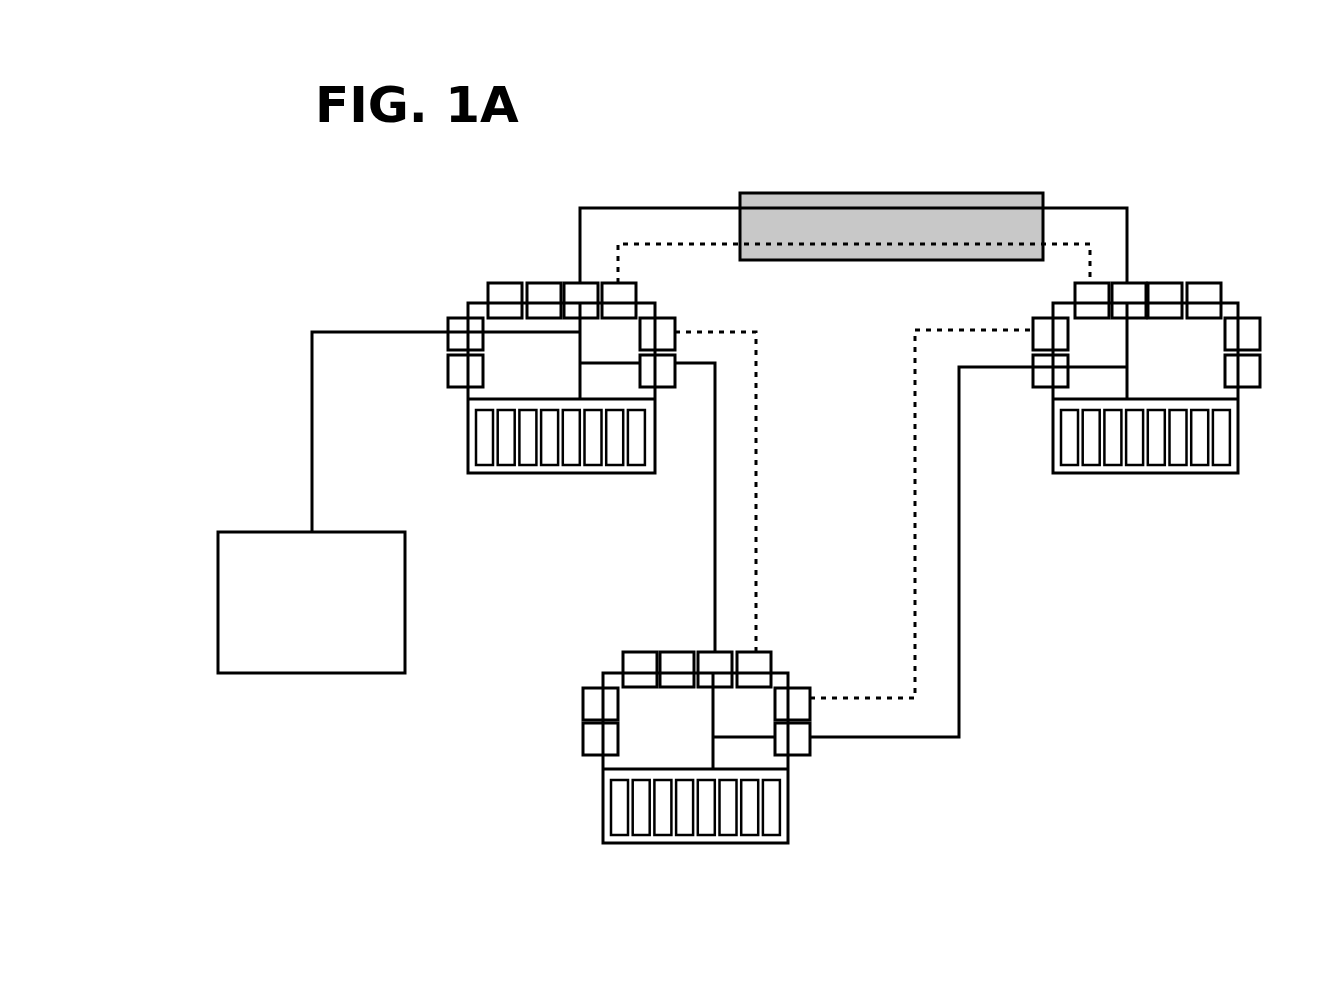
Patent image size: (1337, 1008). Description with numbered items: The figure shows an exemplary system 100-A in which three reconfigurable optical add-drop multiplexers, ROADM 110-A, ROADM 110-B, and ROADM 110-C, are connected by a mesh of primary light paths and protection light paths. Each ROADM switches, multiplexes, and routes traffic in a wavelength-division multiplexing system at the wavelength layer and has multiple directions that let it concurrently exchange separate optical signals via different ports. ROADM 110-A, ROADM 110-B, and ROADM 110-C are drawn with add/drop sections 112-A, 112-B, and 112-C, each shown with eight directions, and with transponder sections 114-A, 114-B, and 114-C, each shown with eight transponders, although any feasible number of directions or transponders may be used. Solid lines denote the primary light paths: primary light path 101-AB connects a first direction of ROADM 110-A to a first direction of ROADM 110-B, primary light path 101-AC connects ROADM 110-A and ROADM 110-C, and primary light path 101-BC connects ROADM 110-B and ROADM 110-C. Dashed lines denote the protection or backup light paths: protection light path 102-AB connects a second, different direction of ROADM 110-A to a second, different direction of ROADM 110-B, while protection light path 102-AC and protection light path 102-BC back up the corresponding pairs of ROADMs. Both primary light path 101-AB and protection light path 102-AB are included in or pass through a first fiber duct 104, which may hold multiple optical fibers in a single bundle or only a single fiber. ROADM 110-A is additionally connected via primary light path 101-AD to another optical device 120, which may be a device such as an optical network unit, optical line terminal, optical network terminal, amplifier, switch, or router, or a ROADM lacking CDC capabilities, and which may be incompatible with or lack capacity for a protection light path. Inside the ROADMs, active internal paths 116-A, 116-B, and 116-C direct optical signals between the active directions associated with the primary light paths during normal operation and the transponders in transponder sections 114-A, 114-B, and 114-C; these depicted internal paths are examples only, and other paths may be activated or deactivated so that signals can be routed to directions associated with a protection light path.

The system 100-A is at (443, 178).
The primary light path 101-AB is at (640, 205).
The primary light path 101-AD is at (348, 327).
The primary light path 101-AC is at (713, 538).
The primary light path 101-BC is at (959, 572).
The protection light path 102-AB is at (720, 248).
The protection light path 102-AC is at (757, 555).
The protection light path 102-BC is at (915, 360).
The first fiber duct 104 is at (828, 193).
The reconfigurable optical add-drop multiplexer 110-A is at (470, 303).
The reconfigurable optical add-drop multiplexer 110-B is at (1278, 263).
The reconfigurable optical add-drop multiplexer 110-C is at (605, 655).
The add/drop section 112-A is at (430, 383).
The add/drop section 112-B is at (1045, 407).
The add/drop section 112-C is at (550, 738).
The transponder section 114-A is at (450, 453).
The transponder section 114-B is at (1086, 491).
The transponder section 114-C is at (568, 808).
The active internal path 116-A is at (548, 338).
The active internal path 116-B is at (1217, 369).
The active internal path 116-C is at (713, 728).
The other optical device 120 is at (293, 658).